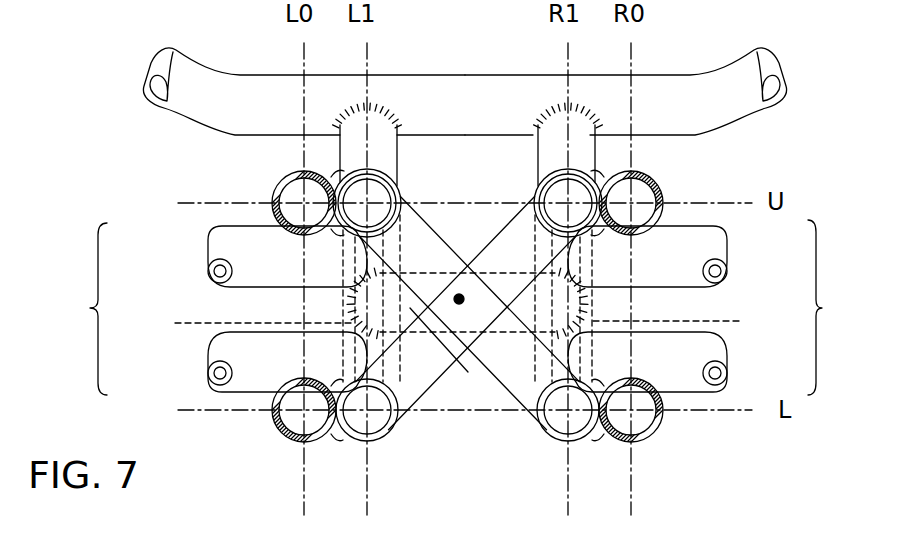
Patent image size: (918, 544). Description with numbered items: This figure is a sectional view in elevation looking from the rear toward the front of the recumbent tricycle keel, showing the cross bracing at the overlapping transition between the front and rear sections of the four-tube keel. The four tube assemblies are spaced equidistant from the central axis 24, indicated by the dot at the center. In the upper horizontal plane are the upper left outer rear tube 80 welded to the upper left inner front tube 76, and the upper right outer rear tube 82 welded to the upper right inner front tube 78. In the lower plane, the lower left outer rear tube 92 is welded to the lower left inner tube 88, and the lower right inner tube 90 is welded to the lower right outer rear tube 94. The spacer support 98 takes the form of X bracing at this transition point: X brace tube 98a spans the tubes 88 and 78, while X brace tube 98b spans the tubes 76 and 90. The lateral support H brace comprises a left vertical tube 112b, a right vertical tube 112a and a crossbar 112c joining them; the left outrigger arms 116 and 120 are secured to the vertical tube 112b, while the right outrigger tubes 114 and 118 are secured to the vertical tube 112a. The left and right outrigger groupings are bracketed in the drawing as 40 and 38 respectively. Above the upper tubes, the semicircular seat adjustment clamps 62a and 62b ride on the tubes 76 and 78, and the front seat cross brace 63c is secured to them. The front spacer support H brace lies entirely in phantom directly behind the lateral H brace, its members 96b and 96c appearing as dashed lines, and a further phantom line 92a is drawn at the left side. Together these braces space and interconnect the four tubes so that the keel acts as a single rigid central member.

The front seat cross brace 63c is at (462, 73).
The seat adjustment clamp 62a is at (394, 133).
The seat adjustment clamp 62b is at (536, 135).
The rear tube 80 is at (273, 193).
The upper front tube 76 is at (391, 184).
The upper front tube 78 is at (542, 185).
The rear tube 82 is at (660, 183).
The rear tube 92 is at (286, 437).
The lower tube 88 is at (381, 439).
The lower tube 90 is at (551, 431).
The rear tube 94 is at (657, 437).
The left outrigger arm 116 is at (227, 242).
The left outrigger arm 120 is at (221, 348).
The right outrigger tube 114 is at (695, 238).
The right outrigger tube 118 is at (700, 350).
The vertical tube 112b is at (343, 298).
The vertical tube 112a is at (595, 300).
The crossbar 112c is at (467, 359).
The front H brace member 96c is at (421, 272).
The front H brace member 96b is at (695, 325).
The left support line 92a is at (236, 325).
The central axis 24 is at (456, 289).
The spacer support 98 is at (343, 463).
The X brace tube 98a is at (415, 387).
The X brace tube 98b is at (518, 387).
The left arm group 40 is at (76, 309).
The right arm group 38 is at (839, 307).